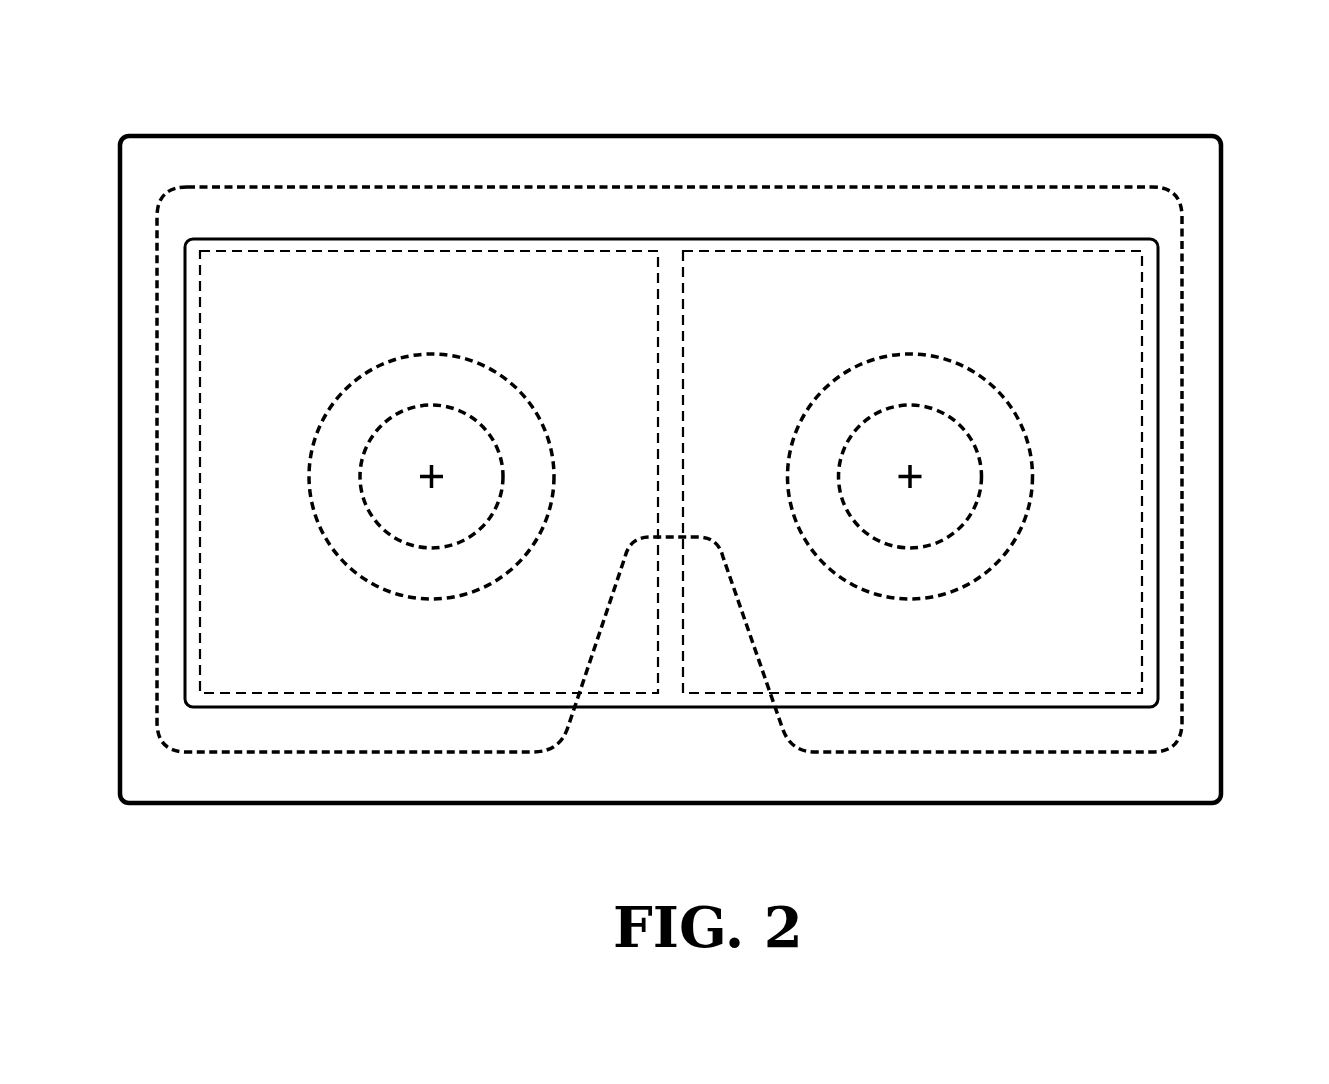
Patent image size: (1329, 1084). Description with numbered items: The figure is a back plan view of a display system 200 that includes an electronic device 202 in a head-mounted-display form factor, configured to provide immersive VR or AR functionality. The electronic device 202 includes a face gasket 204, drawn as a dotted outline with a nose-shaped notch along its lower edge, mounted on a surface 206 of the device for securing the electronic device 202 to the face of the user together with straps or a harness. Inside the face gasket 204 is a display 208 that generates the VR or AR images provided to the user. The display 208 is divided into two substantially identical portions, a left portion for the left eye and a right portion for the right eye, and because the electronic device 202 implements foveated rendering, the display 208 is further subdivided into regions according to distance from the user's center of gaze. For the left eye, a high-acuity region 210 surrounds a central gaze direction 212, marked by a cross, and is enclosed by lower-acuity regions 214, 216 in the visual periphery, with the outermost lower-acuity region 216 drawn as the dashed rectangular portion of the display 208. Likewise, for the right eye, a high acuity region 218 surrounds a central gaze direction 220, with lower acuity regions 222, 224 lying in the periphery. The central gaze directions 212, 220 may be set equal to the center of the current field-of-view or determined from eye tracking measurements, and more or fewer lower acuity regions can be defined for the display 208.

The display system 200 is at (1219, 83).
The electronic device 202 is at (908, 135).
The face gasket 204 is at (473, 753).
The surface 206 is at (224, 775).
The display 208 is at (752, 238).
The high-acuity region 210 is at (493, 440).
The central gaze direction 212 is at (437, 468).
The lower-acuity region 214 is at (342, 392).
The lower-acuity region 216 is at (257, 280).
The high acuity region 218 is at (971, 440).
The central gaze direction 220 is at (915, 468).
The lower acuity region 222 is at (820, 392).
The lower acuity region 224 is at (736, 280).